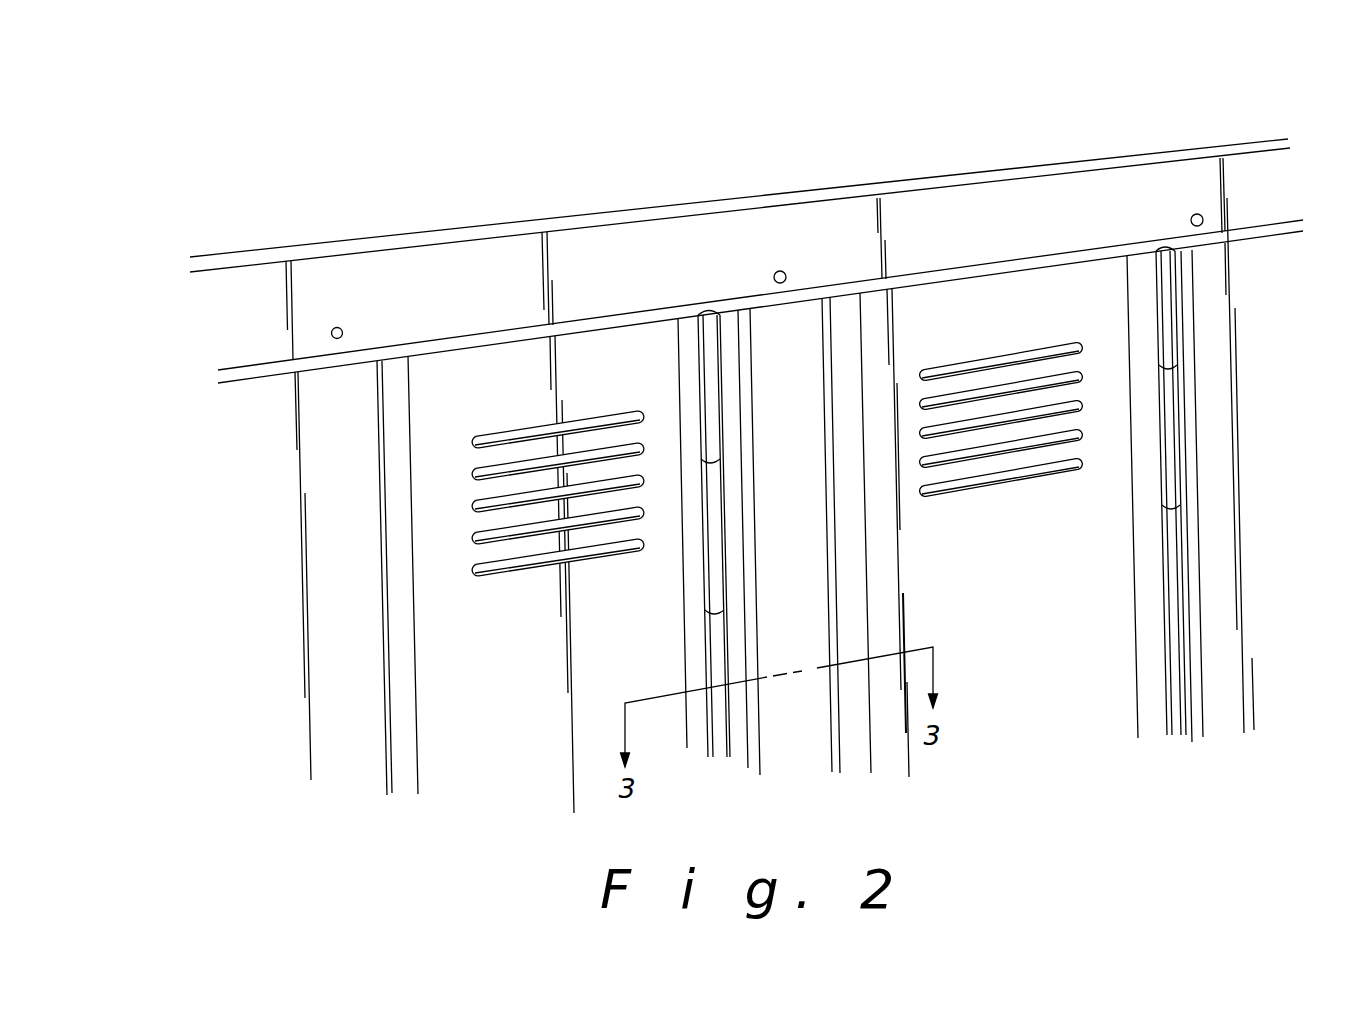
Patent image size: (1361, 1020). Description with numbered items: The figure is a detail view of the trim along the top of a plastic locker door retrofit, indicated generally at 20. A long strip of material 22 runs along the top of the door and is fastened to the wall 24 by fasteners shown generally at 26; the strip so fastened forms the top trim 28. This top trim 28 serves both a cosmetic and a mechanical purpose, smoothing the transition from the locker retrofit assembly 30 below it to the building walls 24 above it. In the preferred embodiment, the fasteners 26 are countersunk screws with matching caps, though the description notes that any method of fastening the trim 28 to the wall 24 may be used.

The trim at the top of the plastic locker door 20 is at (1025, 142).
The long strip of material 22 is at (1137, 195).
The wall 24 is at (773, 173).
The fasteners 26 is at (774, 276).
The top trim 28 is at (842, 237).
The locker retrofit assembly 30 is at (1093, 732).